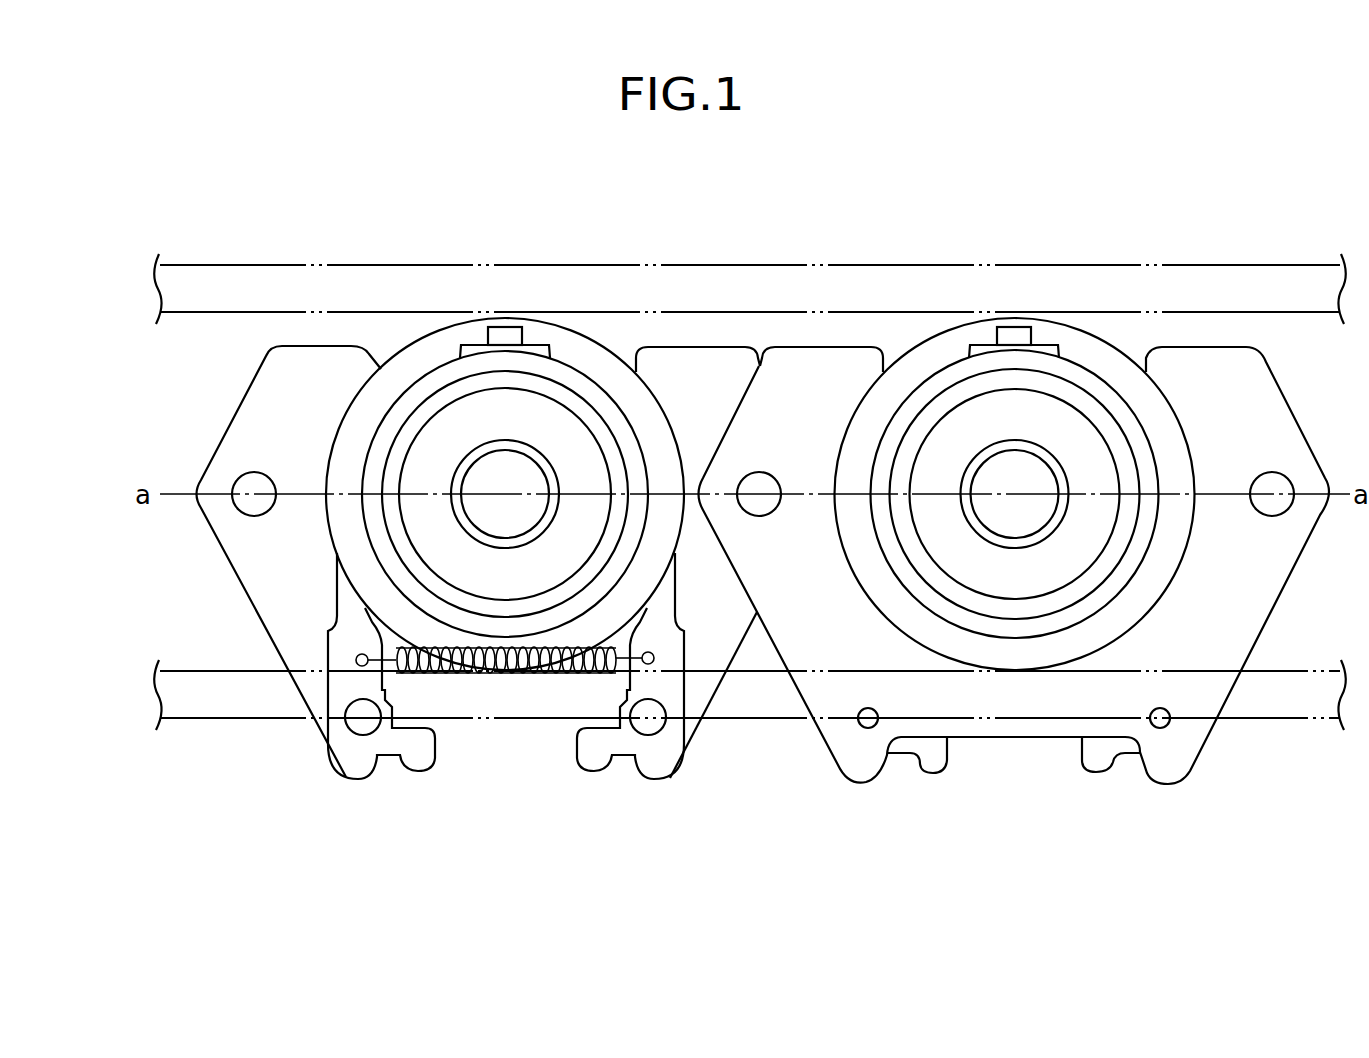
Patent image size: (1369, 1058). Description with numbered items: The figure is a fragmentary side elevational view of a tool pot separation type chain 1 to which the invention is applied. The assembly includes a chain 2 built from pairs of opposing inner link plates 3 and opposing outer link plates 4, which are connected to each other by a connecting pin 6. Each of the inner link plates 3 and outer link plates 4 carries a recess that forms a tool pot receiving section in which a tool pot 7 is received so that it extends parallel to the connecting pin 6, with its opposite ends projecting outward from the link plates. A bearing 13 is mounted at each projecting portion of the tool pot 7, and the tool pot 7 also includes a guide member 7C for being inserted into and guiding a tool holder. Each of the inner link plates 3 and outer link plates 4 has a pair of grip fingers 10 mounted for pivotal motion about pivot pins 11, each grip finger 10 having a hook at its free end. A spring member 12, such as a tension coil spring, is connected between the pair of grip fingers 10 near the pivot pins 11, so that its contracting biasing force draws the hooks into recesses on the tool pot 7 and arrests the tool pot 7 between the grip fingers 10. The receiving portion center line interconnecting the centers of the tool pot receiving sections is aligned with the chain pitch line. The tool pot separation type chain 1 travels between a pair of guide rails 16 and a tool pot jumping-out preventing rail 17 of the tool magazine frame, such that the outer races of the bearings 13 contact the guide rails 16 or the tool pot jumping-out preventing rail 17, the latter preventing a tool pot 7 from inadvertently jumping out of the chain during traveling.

The tool pot separation type chain 1 is at (956, 258).
The chain 2 is at (732, 336).
The inner link plate 3 is at (658, 362).
The outer link plate 4 is at (850, 370).
The connecting pin 6 is at (760, 484).
The tool pot 7 is at (467, 418).
The guide member 7C is at (530, 352).
The grip finger 10 is at (667, 650).
The pivot pin 11 is at (362, 724).
The spring member 12 is at (560, 678).
The bearing 13 is at (405, 362).
The guide rail 16 is at (1248, 702).
The tool pot jumping-out preventing rail 17 is at (1192, 286).